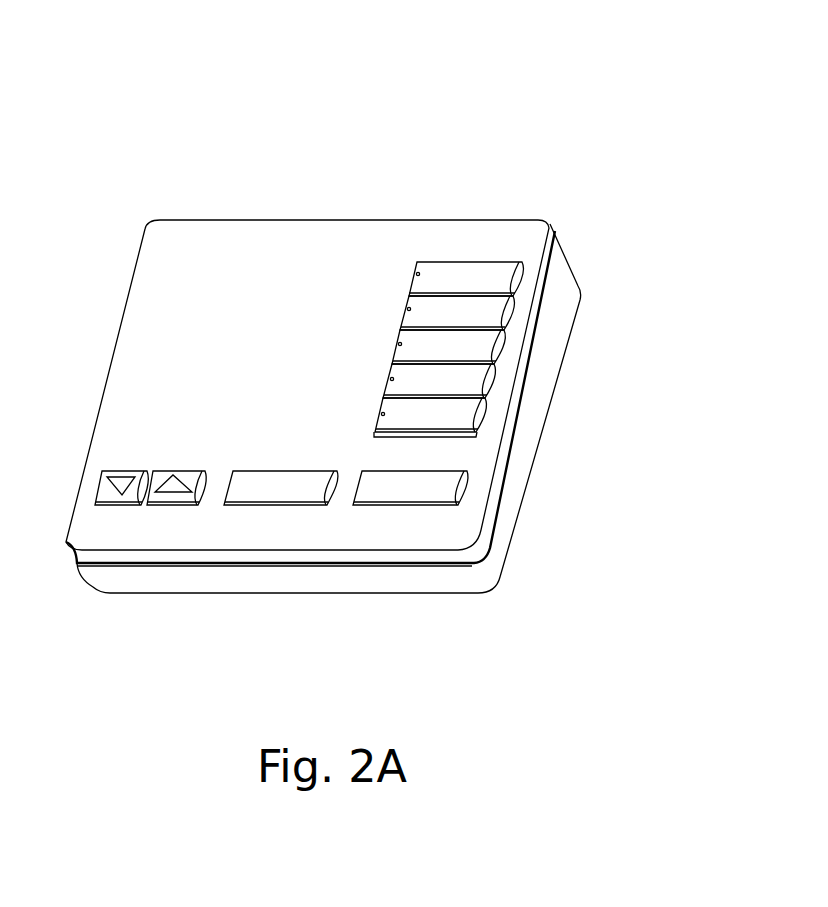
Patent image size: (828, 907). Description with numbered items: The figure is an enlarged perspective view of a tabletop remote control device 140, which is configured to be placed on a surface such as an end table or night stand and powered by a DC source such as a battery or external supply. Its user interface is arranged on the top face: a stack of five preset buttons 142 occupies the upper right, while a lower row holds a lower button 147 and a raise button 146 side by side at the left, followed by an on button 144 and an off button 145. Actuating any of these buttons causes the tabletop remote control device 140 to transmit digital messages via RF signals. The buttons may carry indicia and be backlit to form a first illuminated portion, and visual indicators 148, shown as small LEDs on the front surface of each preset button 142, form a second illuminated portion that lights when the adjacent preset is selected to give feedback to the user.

The tabletop remote control device 140 is at (372, 349).
The preset buttons 142 is at (483, 275).
The on button 144 is at (295, 485).
The off button 145 is at (427, 488).
The raise button 146 is at (172, 492).
The lower button 147 is at (122, 483).
The visual indicators 148 is at (418, 274).